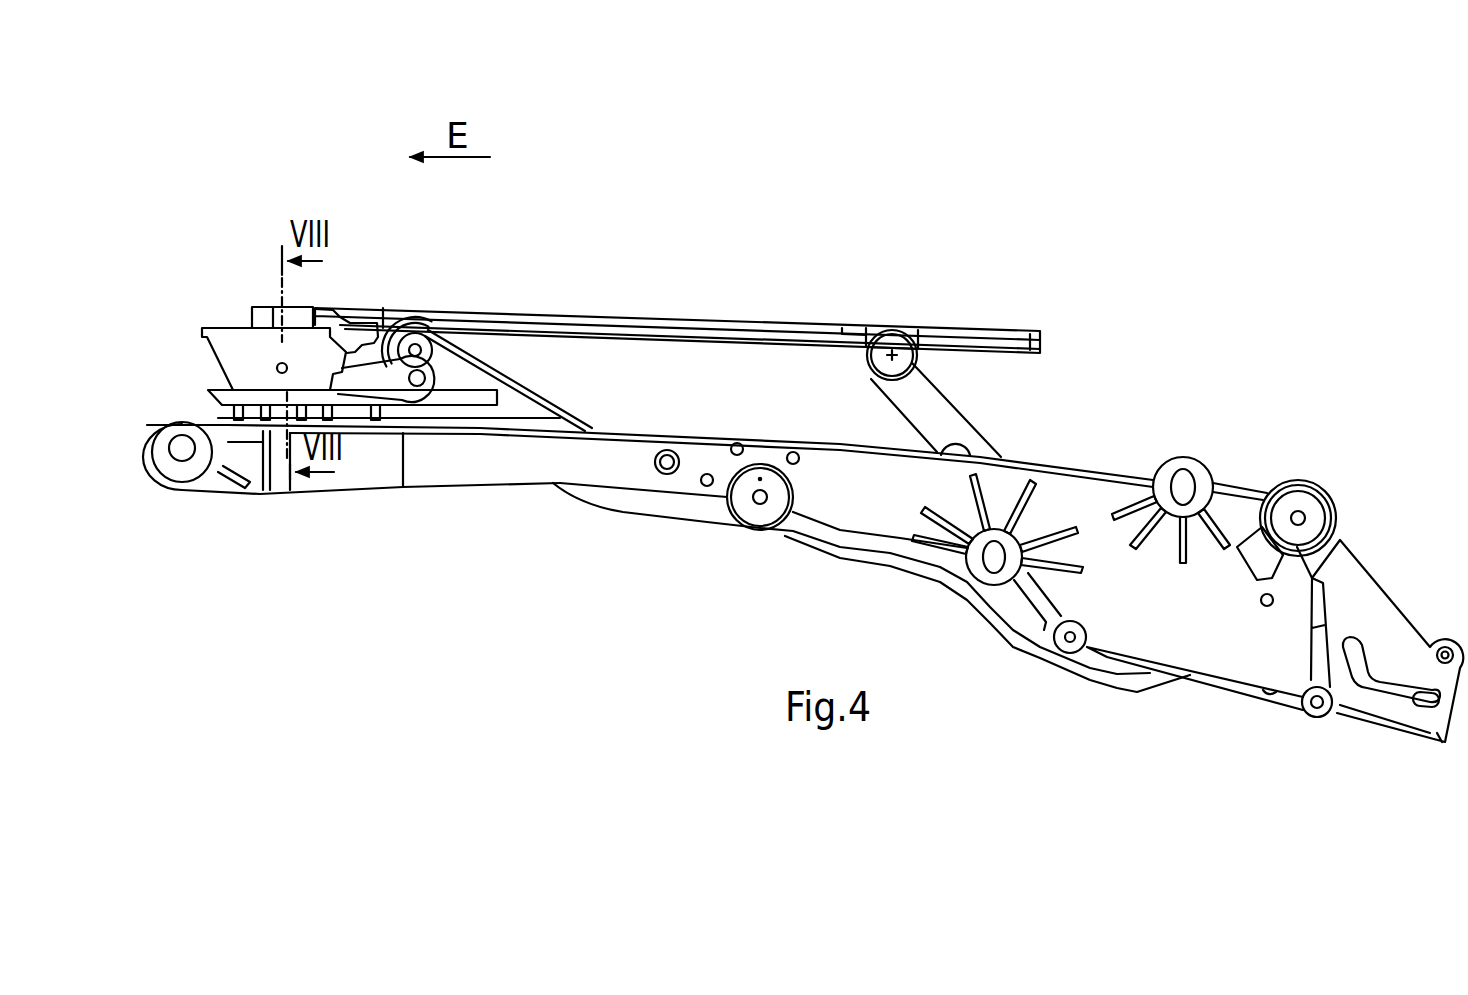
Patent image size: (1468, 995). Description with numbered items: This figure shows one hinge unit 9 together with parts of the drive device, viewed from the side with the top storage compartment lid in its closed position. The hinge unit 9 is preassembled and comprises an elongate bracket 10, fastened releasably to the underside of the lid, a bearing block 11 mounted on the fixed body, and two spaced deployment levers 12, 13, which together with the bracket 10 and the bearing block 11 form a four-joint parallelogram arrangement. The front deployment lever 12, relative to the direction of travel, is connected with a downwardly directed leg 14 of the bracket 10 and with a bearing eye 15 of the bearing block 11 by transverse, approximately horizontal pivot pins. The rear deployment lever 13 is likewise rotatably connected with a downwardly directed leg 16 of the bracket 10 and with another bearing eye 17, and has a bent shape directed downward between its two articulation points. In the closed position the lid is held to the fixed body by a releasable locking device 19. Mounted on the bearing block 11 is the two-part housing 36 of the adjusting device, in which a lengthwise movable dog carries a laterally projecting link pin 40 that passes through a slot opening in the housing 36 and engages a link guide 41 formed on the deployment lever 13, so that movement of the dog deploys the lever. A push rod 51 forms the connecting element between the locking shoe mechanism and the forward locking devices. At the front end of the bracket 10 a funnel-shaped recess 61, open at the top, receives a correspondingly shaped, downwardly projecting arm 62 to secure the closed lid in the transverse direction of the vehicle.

The hinge unit 9 is at (1066, 347).
The bracket 10 is at (681, 319).
The bearing block 11 is at (811, 436).
The deployment lever 12 is at (530, 380).
The deployment lever 13 is at (984, 419).
The leg 14 is at (394, 322).
The bearing eye 15 is at (758, 508).
The leg 16 is at (870, 348).
The bearing eye 17 is at (1337, 481).
The locking device 19 is at (372, 320).
The housing 36 is at (1372, 733).
The link pin 40 is at (1420, 705).
The link guide 41 is at (1391, 667).
The push rod 51 is at (993, 618).
The funnel-shaped recess 61 is at (228, 350).
The arm 62 is at (267, 322).